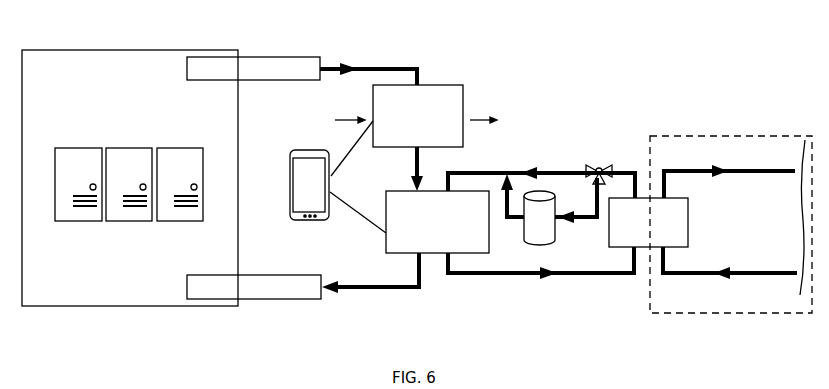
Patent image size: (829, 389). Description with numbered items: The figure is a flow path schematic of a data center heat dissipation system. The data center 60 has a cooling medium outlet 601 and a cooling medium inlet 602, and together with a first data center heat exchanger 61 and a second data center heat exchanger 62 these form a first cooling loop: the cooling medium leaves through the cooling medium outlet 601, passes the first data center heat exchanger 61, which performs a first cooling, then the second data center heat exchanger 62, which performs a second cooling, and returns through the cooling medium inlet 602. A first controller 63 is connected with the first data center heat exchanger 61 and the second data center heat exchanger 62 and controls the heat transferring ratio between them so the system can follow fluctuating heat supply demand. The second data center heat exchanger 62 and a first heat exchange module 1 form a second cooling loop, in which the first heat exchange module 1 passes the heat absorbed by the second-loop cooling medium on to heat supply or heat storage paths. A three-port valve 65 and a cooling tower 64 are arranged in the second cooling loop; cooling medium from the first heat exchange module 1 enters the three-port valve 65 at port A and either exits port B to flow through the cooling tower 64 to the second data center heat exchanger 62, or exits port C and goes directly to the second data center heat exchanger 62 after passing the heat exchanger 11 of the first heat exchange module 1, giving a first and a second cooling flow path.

The first heat exchange module 1 is at (676, 148).
The heat exchanger 11 is at (647, 240).
The data center 60 is at (131, 60).
The cooling medium outlet 601 is at (269, 62).
The cooling medium inlet 602 is at (275, 290).
The first data center heat exchanger 61 is at (447, 95).
The second data center heat exchanger 62 is at (400, 245).
The first controller 63 is at (309, 160).
The cooling tower 64 is at (547, 225).
The three-port valve 65 is at (598, 163).